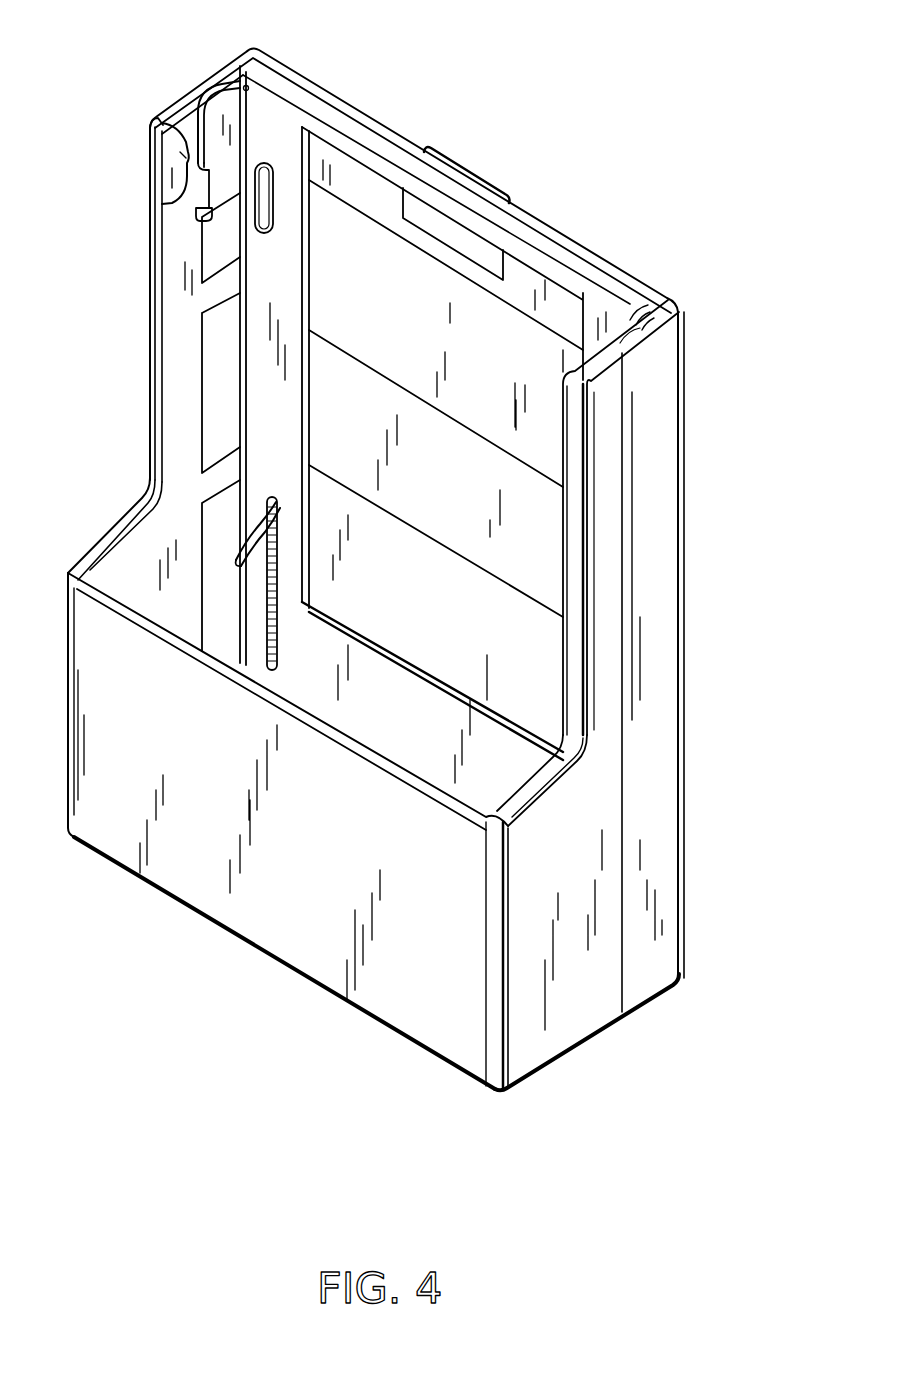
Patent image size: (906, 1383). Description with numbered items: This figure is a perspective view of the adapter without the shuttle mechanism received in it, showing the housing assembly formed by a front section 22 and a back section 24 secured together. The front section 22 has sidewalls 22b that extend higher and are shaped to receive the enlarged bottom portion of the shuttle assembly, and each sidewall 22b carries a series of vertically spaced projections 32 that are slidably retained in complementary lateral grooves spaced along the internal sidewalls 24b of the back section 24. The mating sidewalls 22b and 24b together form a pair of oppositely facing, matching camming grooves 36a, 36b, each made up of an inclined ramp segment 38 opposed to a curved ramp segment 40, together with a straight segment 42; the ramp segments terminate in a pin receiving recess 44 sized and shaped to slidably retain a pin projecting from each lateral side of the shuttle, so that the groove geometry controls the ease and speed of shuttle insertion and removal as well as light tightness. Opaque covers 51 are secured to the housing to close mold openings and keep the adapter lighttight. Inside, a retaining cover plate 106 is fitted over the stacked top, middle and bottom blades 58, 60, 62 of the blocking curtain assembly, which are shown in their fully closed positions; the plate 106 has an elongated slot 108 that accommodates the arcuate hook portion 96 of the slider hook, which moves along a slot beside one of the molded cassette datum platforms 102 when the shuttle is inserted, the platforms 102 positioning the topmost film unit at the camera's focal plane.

The front section 22 is at (553, 1053).
The sidewalls 22b is at (172, 258).
The back section 24 is at (683, 953).
The internal sidewalls 24b is at (250, 44).
The projections 32 is at (225, 462).
The camming groove 36a is at (190, 110).
The camming groove 36b is at (622, 323).
The inclined ramp segment 38 is at (176, 200).
The curved ramp segment 40 is at (199, 105).
The straight segment 42 is at (164, 118).
The pin receiving recess 44 is at (213, 213).
The opaque covers 51 is at (487, 243).
The top blade 58 is at (393, 323).
The middle blade 60 is at (460, 500).
The bottom blade 62 is at (440, 626).
The hook portion 96 is at (240, 543).
The cassette datum platforms 102 is at (262, 163).
The retaining cover plate 106 is at (433, 730).
The elongated slot 108 is at (281, 645).